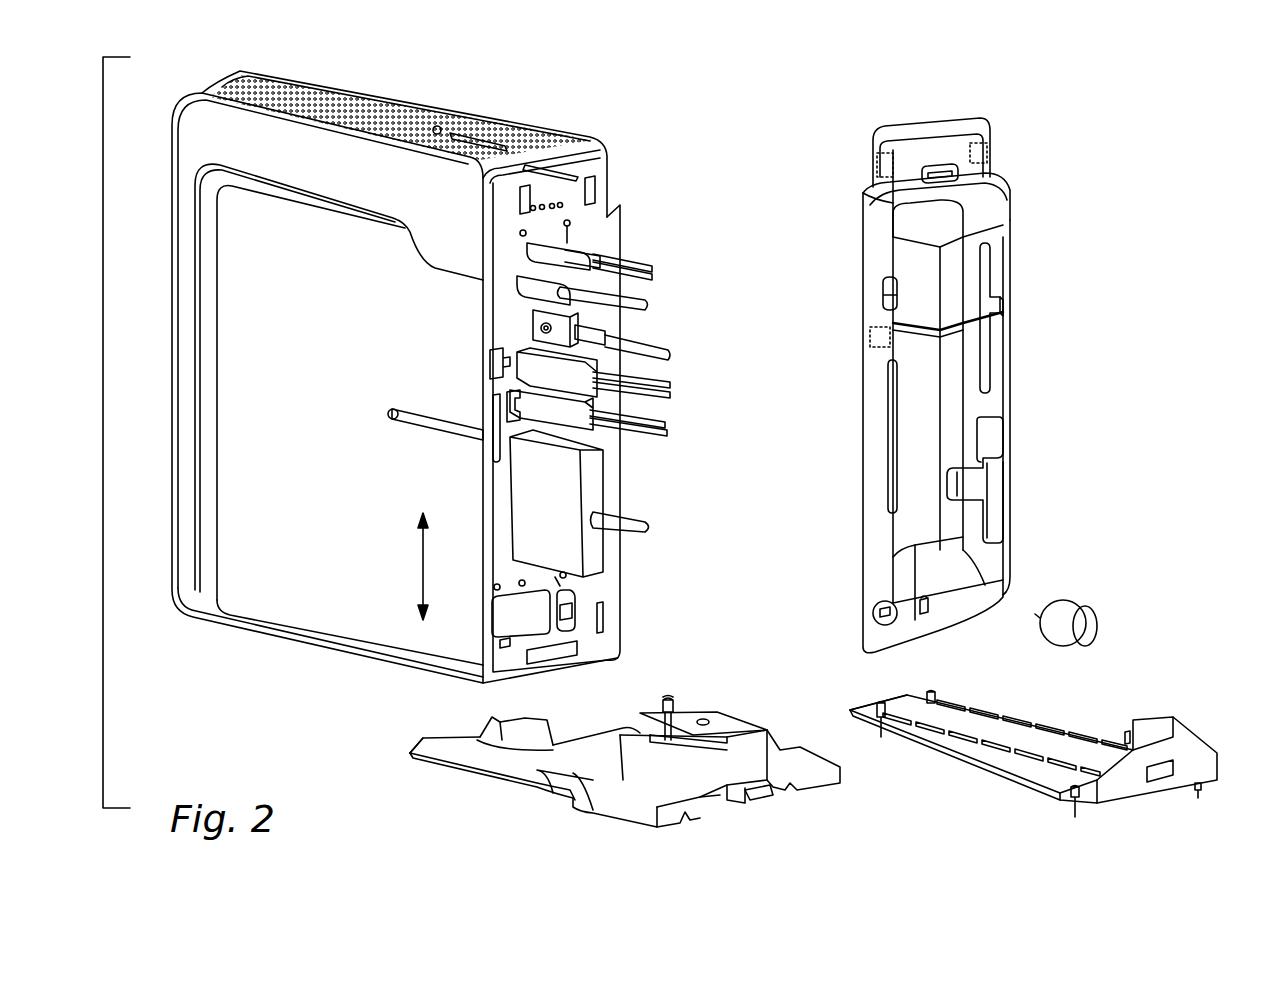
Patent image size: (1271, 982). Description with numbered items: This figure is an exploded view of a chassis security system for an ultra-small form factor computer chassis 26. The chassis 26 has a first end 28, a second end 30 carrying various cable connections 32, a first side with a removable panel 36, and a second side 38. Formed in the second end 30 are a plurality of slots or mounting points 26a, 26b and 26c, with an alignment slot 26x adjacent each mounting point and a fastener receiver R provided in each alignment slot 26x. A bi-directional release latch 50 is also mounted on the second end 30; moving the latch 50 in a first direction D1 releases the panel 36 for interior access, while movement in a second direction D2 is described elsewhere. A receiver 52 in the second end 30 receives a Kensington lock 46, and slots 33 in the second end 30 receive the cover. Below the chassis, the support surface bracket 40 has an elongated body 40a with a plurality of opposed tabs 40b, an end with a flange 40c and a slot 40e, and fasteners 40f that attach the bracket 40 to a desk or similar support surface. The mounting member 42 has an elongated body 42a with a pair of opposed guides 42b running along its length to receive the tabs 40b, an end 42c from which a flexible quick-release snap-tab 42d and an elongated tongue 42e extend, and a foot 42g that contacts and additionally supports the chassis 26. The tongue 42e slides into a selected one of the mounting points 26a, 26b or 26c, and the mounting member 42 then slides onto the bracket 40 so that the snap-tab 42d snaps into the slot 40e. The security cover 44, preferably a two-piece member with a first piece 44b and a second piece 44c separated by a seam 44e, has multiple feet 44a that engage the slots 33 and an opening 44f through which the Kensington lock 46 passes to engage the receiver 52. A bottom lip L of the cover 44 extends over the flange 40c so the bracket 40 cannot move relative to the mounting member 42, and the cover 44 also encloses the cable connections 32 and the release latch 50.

The computer chassis 26 is at (466, 92).
The alignment slot 26x is at (520, 137).
The second side 38 is at (560, 141).
The mounting point 26c is at (605, 170).
The slots 33 is at (594, 185).
The second end 30 is at (620, 212).
The cable connections 32 is at (641, 296).
The first end 28 is at (172, 398).
The fastener receiver R is at (390, 415).
The mounting point 26b is at (498, 460).
The first direction D1 is at (420, 517).
The second direction D2 is at (420, 612).
The removable panel 36 is at (293, 592).
The release latch 50 is at (578, 600).
The mounting point 26a is at (575, 648).
The receiver 52 is at (514, 645).
The mounting member 42 is at (470, 775).
The foot 42g is at (493, 715).
The elongated body 42a is at (418, 745).
The tongue 42e is at (725, 733).
The guides 42b is at (685, 812).
The end 42c is at (743, 760).
The snap-tab 42d is at (767, 793).
The support surface bracket 40 is at (1053, 797).
The elongated body 40a is at (873, 713).
The tabs 40b is at (907, 695).
The fasteners 40f is at (883, 733).
The flange 40c is at (1180, 740).
The slot 40e is at (1160, 780).
The security cover 44 is at (1013, 267).
The feet 44a is at (870, 177).
The seam 44e is at (917, 330).
The first piece 44b is at (1013, 388).
The second piece 44c is at (873, 470).
The opening 44f is at (873, 613).
The bottom lip L is at (957, 637).
The Kensington lock 46 is at (1085, 628).